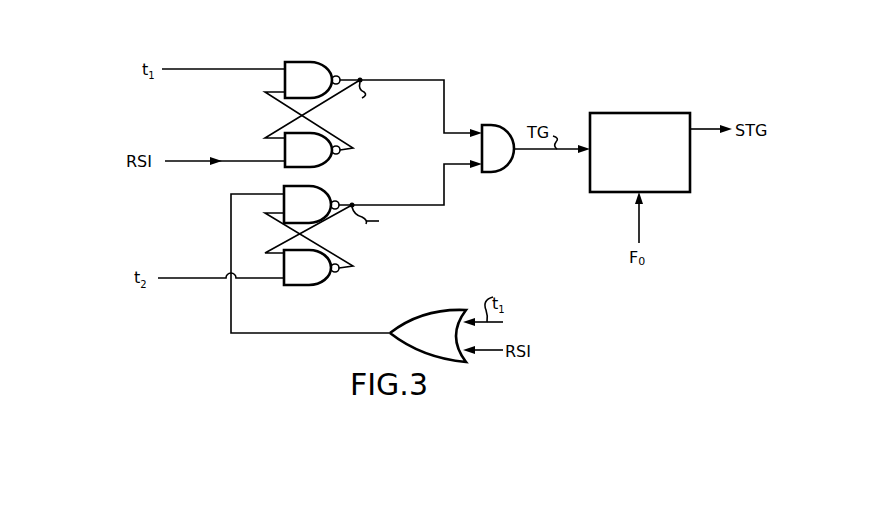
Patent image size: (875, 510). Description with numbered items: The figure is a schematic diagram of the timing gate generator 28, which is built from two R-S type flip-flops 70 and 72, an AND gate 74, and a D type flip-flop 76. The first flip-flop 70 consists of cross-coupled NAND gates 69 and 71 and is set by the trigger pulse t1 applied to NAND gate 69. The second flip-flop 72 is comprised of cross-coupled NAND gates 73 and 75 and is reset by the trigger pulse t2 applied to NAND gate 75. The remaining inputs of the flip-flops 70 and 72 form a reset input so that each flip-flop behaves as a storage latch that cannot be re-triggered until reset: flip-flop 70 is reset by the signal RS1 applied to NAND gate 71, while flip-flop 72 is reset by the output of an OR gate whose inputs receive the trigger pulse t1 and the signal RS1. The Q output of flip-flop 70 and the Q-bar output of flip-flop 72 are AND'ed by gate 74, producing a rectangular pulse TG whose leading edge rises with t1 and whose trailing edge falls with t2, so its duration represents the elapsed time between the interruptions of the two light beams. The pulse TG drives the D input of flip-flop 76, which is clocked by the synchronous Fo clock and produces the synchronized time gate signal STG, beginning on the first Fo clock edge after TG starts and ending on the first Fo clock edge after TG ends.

The timing gate generator 28 is at (538, 262).
The NAND gate 69 is at (318, 76).
The R-S type flip-flop 70 is at (236, 110).
The NAND gate 71 is at (330, 164).
The R-S type flip-flop 72 is at (218, 222).
The NAND gate 73 is at (335, 190).
The AND gate 74 is at (496, 136).
The NAND gate 75 is at (330, 286).
The D type flip-flop 76 is at (641, 113).